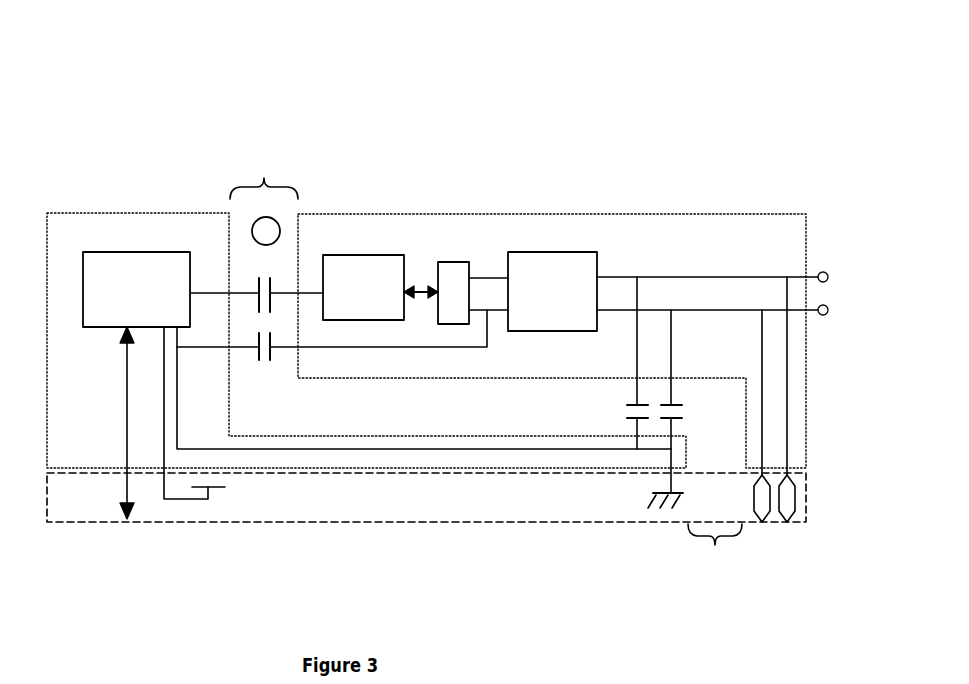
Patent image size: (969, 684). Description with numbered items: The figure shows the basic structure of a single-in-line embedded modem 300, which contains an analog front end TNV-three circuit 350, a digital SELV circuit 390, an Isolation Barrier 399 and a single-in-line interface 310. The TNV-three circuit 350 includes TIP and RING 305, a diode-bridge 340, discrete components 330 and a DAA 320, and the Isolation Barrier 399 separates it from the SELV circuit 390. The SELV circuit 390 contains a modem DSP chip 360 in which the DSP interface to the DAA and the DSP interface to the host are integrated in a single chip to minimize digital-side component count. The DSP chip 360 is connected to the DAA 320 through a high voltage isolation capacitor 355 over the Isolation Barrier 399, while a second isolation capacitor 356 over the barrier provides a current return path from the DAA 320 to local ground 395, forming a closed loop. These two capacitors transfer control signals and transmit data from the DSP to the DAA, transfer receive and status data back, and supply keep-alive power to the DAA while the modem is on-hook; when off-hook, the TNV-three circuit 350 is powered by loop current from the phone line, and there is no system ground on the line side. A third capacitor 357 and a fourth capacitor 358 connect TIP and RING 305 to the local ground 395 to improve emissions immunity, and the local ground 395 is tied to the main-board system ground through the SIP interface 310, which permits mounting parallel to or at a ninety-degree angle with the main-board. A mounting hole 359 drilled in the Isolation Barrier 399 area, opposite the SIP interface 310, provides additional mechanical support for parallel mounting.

The single-in-line embedded modem 300 is at (425, 62).
The TIP and RING 305 is at (778, 612).
The single-in-line (SIP) interface 310 is at (541, 505).
The DAA 320 is at (372, 311).
The discrete components 330 is at (458, 254).
The diode-bridge 340 is at (553, 319).
The TNV-3 circuit 350 is at (762, 248).
The capacitor C1 355 is at (275, 318).
The capacitor C4 356 is at (267, 384).
The capacitor C24 357 is at (611, 430).
The capacitor C25 358 is at (719, 430).
The mounting hole 359 is at (288, 230).
The DSP chip 360 is at (169, 280).
The SELV circuit 390 is at (191, 238).
The local ground 395 is at (650, 517).
The Isolation Barrier 399 is at (290, 156).